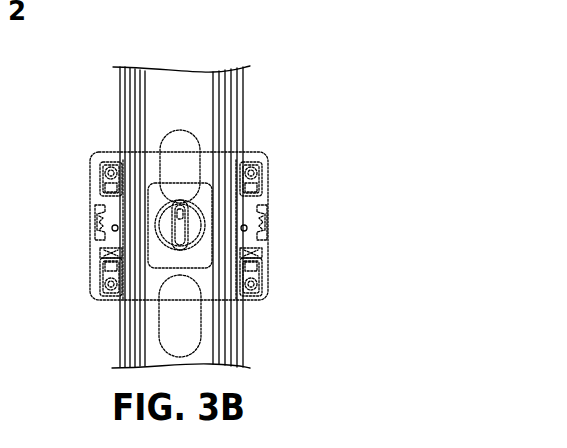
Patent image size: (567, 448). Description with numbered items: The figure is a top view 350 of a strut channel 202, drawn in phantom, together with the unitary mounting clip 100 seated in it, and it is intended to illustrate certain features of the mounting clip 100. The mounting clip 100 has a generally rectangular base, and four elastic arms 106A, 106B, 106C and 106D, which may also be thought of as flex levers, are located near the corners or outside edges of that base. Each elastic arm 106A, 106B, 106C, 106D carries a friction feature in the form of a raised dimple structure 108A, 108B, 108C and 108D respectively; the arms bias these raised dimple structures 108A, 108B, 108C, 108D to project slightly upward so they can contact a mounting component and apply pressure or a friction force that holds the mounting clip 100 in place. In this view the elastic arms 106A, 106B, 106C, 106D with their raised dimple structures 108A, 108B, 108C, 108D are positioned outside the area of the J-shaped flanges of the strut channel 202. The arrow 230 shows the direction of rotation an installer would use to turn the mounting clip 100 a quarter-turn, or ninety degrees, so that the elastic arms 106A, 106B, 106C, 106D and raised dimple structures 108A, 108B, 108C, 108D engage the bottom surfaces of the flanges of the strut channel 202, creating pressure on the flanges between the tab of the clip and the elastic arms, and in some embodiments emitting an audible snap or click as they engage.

The top view 350 is at (261, 42).
The strut channel 202 is at (157, 113).
The mounting clip 100 is at (86, 250).
The arrow 230 is at (273, 157).
The raised dimple structure 108A is at (270, 298).
The raised dimple structure 108B is at (262, 153).
The raised dimple structure 108C is at (100, 172).
The raised dimple structure 108D is at (95, 299).
The elastic arm 106A is at (259, 260).
The elastic arm 106B is at (259, 199).
The elastic arm 106C is at (100, 199).
The elastic arm 106D is at (100, 268).